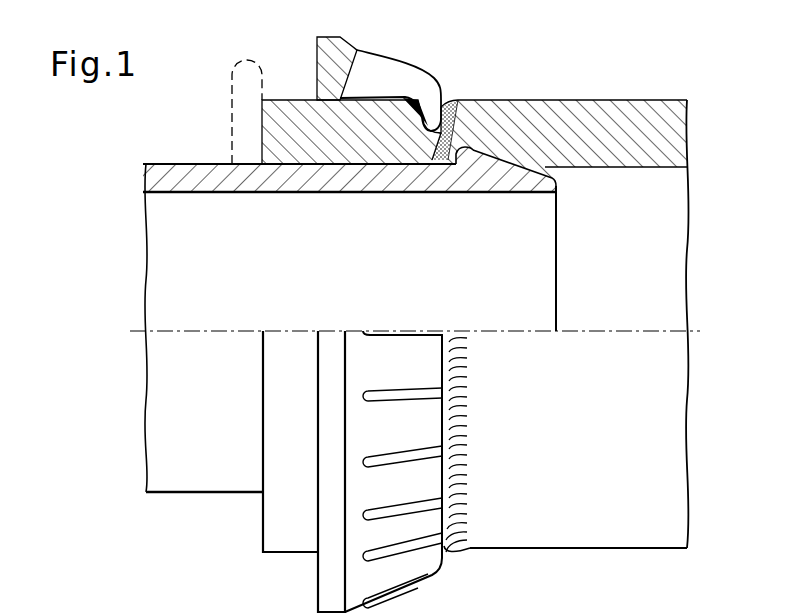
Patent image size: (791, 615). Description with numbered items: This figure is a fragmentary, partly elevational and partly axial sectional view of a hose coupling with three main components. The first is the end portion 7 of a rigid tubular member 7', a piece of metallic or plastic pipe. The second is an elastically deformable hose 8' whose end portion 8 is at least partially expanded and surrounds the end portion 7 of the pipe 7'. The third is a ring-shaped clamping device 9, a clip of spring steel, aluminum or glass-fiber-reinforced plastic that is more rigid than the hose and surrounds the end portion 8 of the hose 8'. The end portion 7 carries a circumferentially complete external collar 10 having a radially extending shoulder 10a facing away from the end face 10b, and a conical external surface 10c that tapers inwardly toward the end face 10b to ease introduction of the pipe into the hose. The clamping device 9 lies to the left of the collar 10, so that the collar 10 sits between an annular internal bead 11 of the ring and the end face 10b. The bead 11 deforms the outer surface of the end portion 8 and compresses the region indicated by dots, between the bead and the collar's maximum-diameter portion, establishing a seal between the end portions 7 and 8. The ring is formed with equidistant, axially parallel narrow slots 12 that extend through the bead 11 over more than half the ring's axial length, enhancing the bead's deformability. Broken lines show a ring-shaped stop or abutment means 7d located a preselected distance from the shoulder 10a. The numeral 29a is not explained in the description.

The end portion 7 is at (349, 370).
The stop or abutment means 7d is at (240, 95).
The rigid tubular member 7' is at (116, 322).
The end portion 8 is at (568, 305).
The hose 8' is at (711, 159).
The clamping device 9 is at (308, 47).
The collar 10 is at (468, 148).
The shoulder 10a is at (463, 160).
The end face 10b is at (557, 243).
The conical external surface 10c is at (543, 175).
The internal bead 11 is at (432, 110).
The slots 12 is at (385, 70).
The slot 29a is at (195, 614).